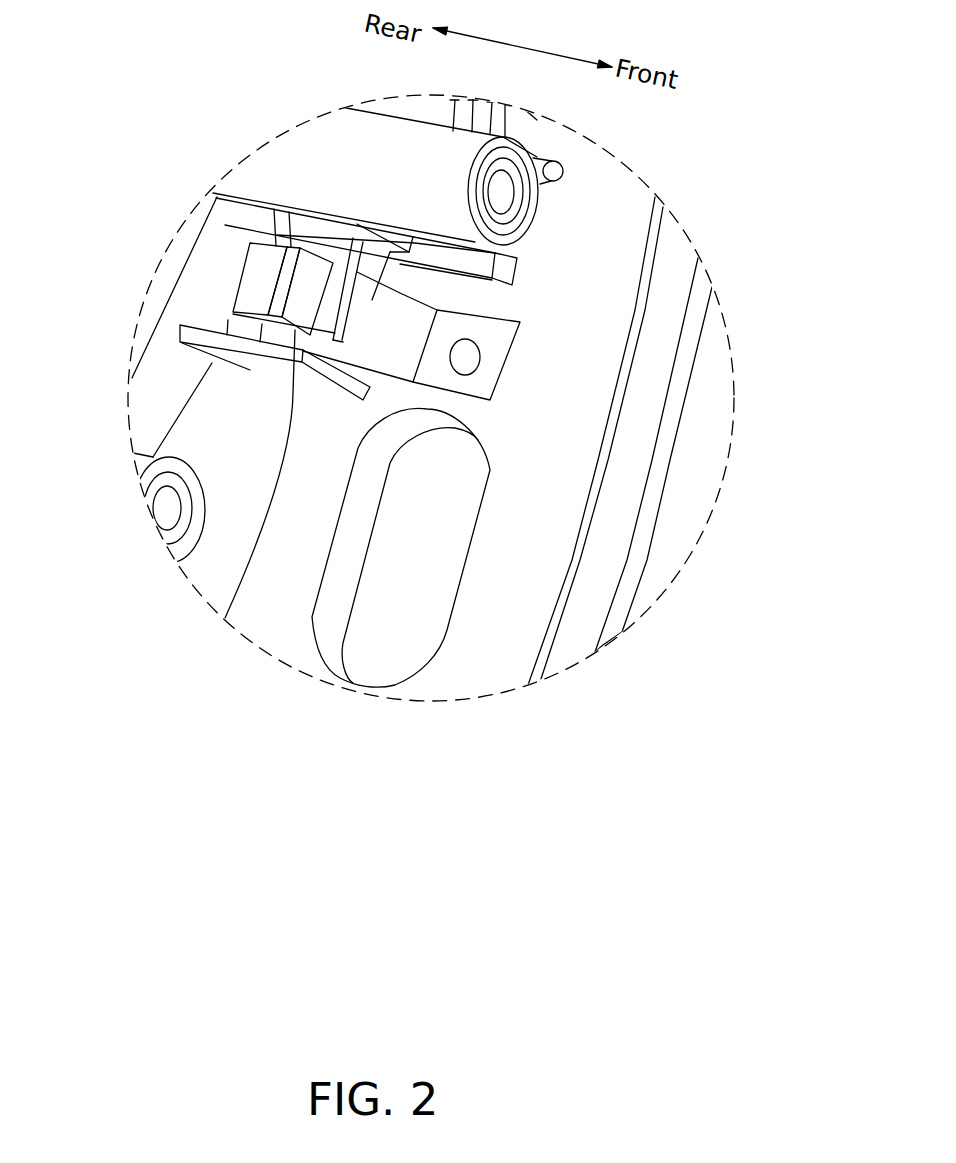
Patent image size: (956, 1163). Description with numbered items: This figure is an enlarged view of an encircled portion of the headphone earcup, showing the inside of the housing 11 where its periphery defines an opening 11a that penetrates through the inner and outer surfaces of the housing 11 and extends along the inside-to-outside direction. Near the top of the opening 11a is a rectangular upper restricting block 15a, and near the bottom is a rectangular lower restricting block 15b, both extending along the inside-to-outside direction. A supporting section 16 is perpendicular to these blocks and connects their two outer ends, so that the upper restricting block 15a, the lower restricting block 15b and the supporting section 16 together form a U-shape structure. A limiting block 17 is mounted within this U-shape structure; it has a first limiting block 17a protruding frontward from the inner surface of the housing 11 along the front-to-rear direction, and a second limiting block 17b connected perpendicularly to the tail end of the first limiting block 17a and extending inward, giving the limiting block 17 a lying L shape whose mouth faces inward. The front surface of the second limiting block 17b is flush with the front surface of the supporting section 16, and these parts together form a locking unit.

The housing 11 is at (498, 660).
The opening 11a is at (478, 350).
The upper restricting block 15a is at (288, 201).
The lower restricting block 15b is at (267, 370).
The supporting section 16 is at (307, 240).
The limiting block 17 is at (185, 287).
The first limiting block 17a is at (247, 310).
The second limiting block 17b is at (288, 265).